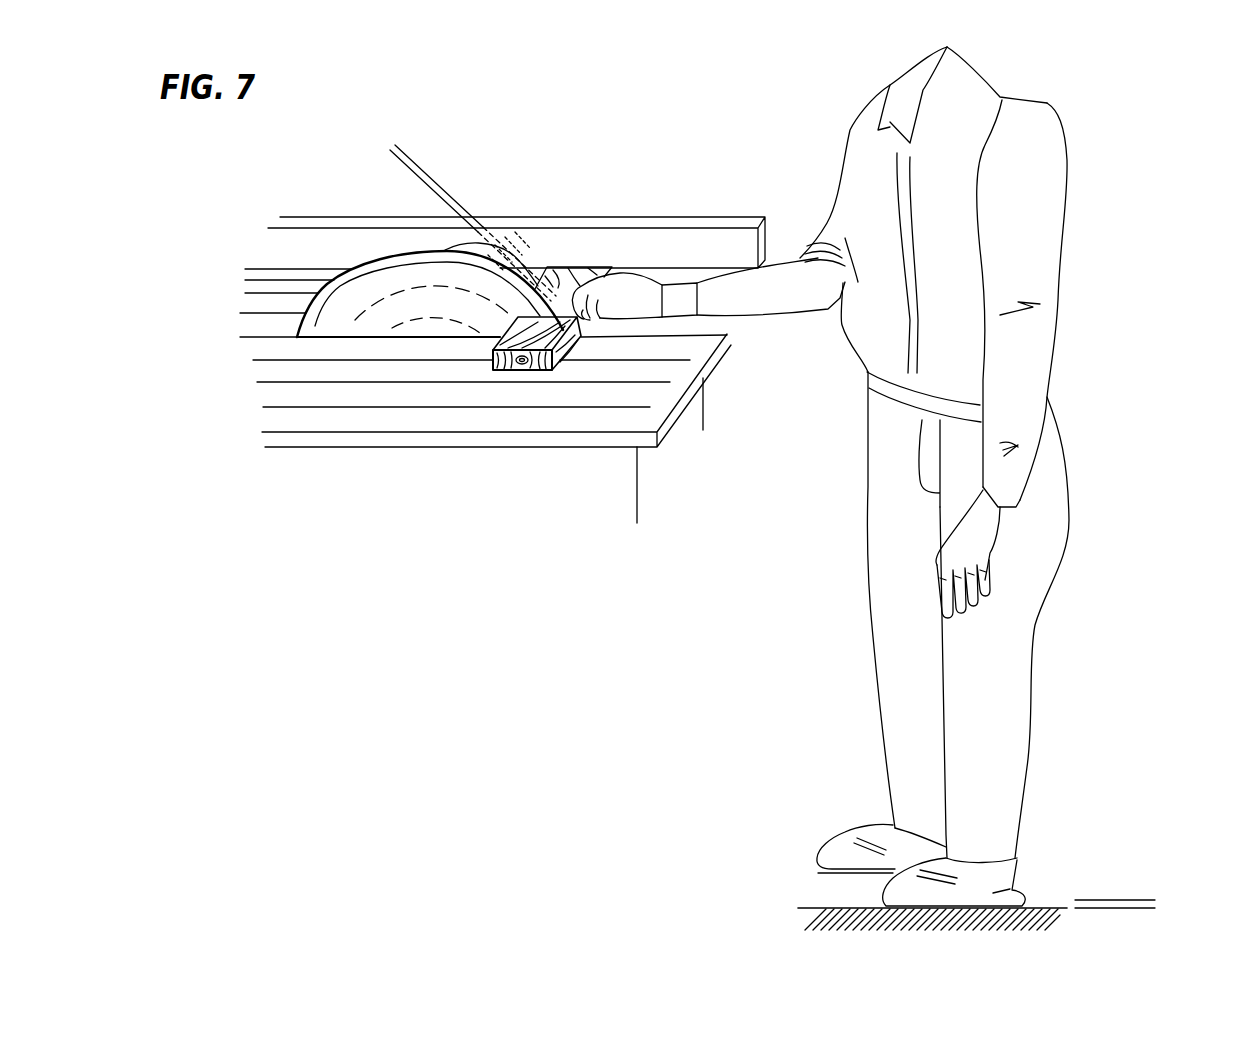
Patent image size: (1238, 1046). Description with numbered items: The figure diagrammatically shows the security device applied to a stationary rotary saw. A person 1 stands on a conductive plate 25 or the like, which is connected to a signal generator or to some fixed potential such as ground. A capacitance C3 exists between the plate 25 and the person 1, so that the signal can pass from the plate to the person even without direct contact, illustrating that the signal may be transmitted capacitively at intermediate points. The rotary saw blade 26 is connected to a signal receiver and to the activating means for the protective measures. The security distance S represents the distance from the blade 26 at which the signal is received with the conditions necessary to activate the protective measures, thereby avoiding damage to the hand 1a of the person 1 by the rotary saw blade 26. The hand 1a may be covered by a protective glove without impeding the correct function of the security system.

The person 1 is at (1057, 260).
The hand 1a is at (632, 280).
The rotary saw blade 26 is at (390, 293).
The conductive plate 25 is at (840, 921).
The security distance S is at (391, 157).
The capacitance C3 is at (1147, 863).